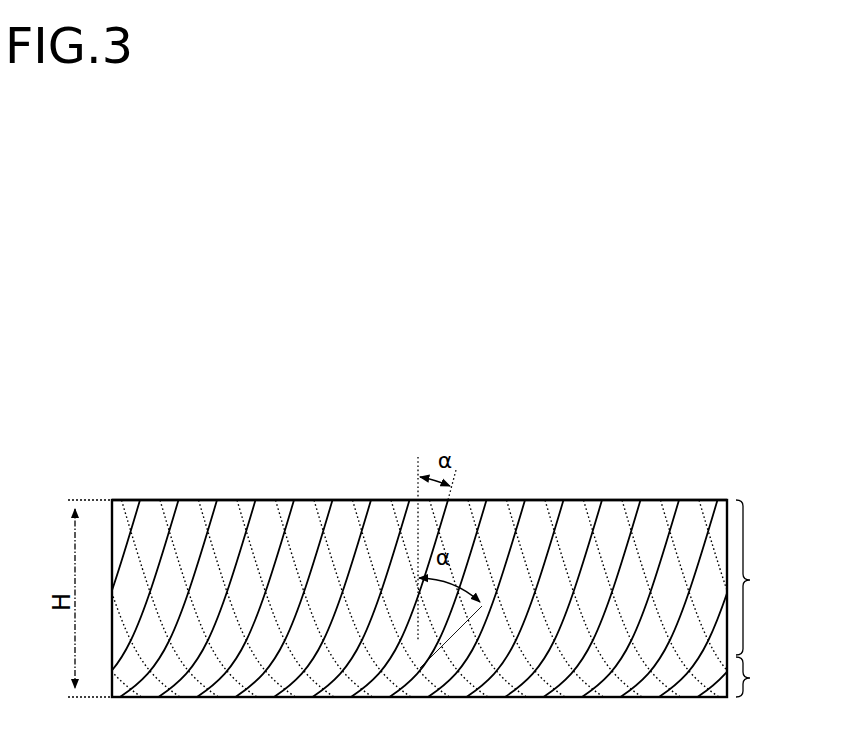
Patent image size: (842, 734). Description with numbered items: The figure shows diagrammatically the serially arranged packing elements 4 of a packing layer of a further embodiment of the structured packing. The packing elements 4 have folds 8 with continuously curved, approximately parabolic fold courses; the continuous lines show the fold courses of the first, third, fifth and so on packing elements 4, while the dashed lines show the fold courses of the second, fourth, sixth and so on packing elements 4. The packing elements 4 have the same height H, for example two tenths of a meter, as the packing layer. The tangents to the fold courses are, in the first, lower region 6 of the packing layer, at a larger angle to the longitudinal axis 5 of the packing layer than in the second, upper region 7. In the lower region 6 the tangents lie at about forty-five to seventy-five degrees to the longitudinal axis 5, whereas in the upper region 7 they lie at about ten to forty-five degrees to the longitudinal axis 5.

The packing element 4 is at (165, 498).
The longitudinal axis 5 is at (418, 457).
The first, lower region 6 is at (752, 677).
The second, upper region 7 is at (752, 577).
The folds 8 is at (631, 512).